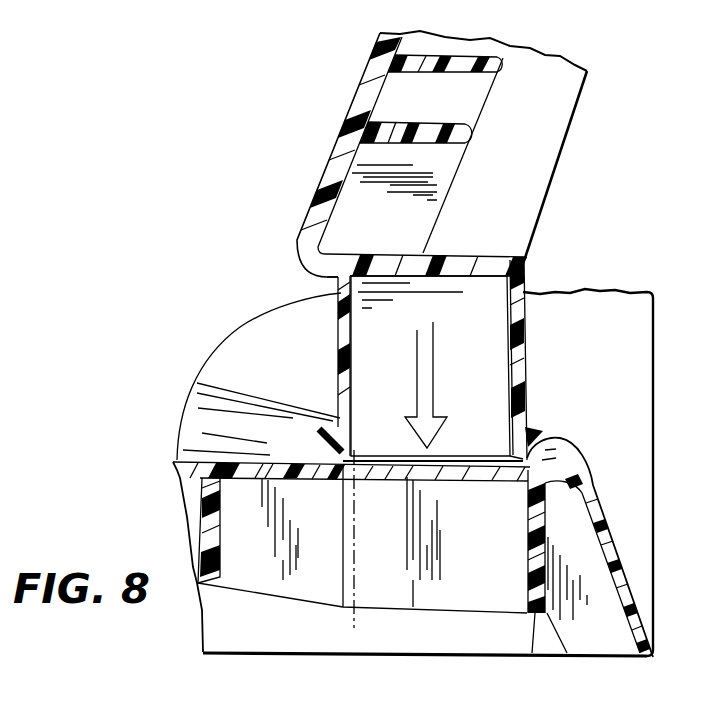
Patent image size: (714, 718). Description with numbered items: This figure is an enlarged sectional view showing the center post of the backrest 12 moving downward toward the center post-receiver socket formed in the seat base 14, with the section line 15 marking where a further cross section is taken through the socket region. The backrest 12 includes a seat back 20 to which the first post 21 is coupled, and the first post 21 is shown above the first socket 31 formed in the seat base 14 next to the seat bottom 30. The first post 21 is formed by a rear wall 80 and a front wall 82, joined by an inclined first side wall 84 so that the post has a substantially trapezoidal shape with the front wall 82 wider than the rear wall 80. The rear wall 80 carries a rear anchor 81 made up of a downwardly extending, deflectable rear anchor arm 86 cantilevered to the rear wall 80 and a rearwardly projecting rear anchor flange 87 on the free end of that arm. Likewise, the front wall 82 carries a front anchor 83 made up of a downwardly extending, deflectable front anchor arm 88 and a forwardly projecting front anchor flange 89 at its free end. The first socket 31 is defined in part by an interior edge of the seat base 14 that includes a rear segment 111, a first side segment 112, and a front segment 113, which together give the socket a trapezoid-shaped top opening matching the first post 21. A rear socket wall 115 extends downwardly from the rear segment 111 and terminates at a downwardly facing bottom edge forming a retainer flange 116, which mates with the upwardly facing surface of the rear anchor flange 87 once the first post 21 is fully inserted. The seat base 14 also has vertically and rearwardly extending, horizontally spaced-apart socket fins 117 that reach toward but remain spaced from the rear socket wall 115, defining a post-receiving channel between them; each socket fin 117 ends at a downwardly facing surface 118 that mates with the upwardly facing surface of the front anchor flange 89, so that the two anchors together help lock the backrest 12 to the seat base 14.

The backrest 12 is at (342, 80).
The seat base 14 is at (182, 382).
The section line 15- 15 is at (520, 457).
The seat back 20 is at (330, 177).
The first post 21 is at (540, 368).
The seat bottom 30 is at (172, 452).
The first socket 31 is at (510, 519).
The rear wall 80 is at (426, 358).
The rear anchor 81 is at (528, 406).
The front wall 82 is at (340, 313).
The front anchor 83 is at (333, 388).
The first side wall 84 is at (486, 342).
The rear anchor arm 86 is at (518, 354).
The rear anchor flange 87 is at (520, 446).
The front anchor arm 88 is at (345, 341).
The front anchor flange 89 is at (338, 433).
The rear segment 111 is at (513, 473).
The first side segment 112 is at (430, 473).
The front segment 113 is at (352, 468).
The rear socket wall 115 is at (528, 548).
The retainer flange 116 is at (535, 620).
The socket fins 117 is at (320, 518).
The downwardly facing surface 118 is at (327, 610).